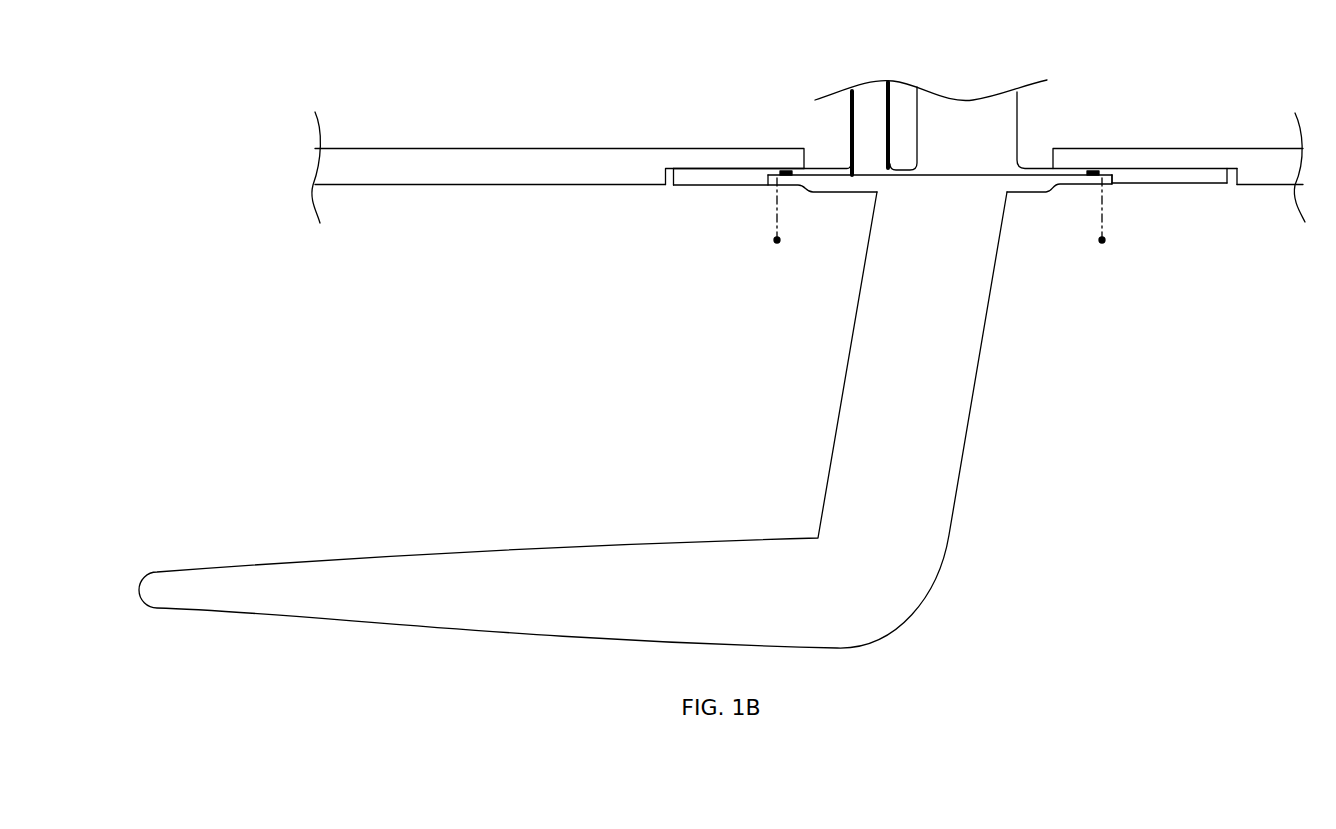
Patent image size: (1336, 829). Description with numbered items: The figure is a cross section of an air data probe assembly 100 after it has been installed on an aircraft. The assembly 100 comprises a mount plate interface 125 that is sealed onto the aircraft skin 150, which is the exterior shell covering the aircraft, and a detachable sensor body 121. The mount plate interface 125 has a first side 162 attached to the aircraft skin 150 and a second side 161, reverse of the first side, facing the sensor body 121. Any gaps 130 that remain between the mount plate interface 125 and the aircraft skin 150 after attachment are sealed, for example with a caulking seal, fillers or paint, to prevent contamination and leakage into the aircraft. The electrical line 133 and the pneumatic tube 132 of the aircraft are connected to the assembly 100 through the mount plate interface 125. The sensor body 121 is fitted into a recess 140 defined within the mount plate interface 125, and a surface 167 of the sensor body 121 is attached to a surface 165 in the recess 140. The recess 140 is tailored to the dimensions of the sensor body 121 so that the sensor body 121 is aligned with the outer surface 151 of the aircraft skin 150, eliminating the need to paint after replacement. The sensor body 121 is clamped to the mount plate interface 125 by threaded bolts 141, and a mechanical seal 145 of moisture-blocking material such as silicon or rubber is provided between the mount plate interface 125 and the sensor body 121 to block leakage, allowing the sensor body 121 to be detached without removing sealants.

The air data probe assembly 100 is at (722, 340).
The sensor body 121 is at (948, 450).
The mount plate interface 125 is at (682, 175).
The gaps 130 is at (669, 188).
The pneumatic tube 132 is at (868, 105).
The electrical line 133 is at (952, 112).
The recess 140 is at (1113, 179).
The threaded bolts 141 is at (1102, 243).
The mechanical seal 145 is at (784, 171).
The aircraft skin 150 is at (581, 181).
The outer surface 151 is at (382, 193).
The second side 161 is at (723, 195).
The first side 162 is at (733, 163).
The surface 165 is at (943, 187).
The surface 167 is at (1003, 164).